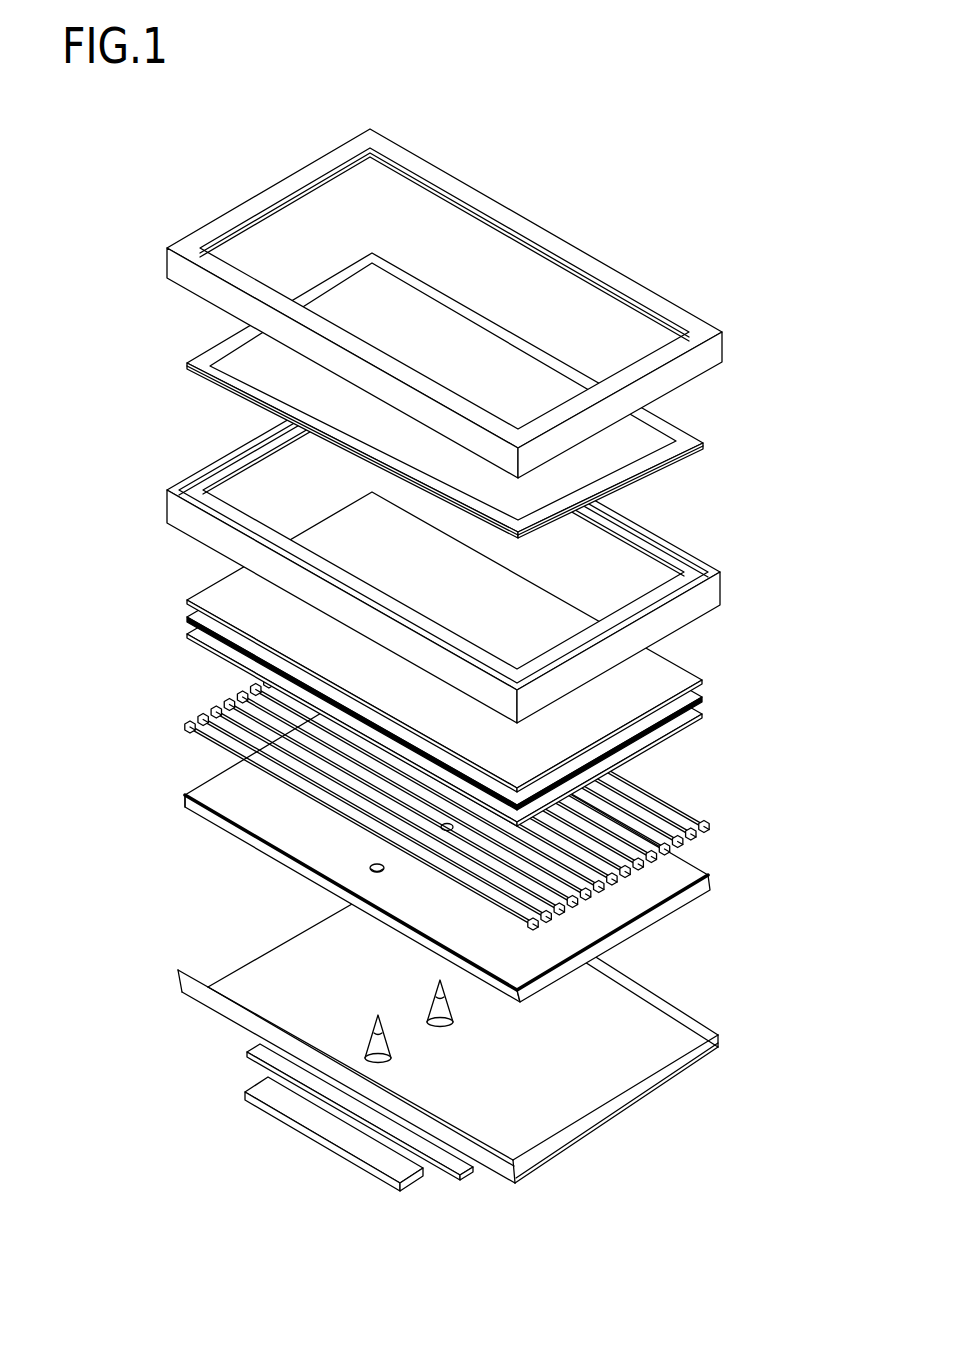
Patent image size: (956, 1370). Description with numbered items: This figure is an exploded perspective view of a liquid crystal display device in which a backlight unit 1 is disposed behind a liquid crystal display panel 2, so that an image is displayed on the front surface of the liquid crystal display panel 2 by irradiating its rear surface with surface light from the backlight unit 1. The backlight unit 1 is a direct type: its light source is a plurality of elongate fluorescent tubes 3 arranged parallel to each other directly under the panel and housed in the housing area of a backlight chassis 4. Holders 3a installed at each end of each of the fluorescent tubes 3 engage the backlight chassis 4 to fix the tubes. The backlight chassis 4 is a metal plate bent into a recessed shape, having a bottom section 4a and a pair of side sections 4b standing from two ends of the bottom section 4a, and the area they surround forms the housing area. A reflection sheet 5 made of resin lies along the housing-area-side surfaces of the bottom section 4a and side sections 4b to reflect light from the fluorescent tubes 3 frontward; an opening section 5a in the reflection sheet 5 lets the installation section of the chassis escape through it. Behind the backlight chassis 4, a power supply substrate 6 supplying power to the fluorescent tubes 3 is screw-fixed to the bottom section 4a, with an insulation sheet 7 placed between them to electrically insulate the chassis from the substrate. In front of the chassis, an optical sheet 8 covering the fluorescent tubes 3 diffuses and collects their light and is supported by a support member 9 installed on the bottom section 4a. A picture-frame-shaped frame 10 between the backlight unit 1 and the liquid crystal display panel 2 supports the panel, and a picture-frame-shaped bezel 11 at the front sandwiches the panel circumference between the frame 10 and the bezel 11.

The backlight unit 1 is at (783, 665).
The liquid crystal display panel 2 is at (705, 445).
The fluorescent tubes 3 is at (477, 777).
The holders 3a is at (712, 828).
The backlight chassis 4 is at (470, 1034).
The bottom section 4a is at (598, 1115).
The side sections 4b is at (703, 1046).
The reflection sheet 5 is at (468, 841).
The opening section 5a is at (384, 870).
The power supply substrate 6 is at (380, 1180).
The insulation sheet 7 is at (448, 1180).
The optical sheet 8 is at (704, 681).
The support member 9 is at (393, 1050).
The frame 10 is at (722, 598).
The bezel 11 is at (722, 350).